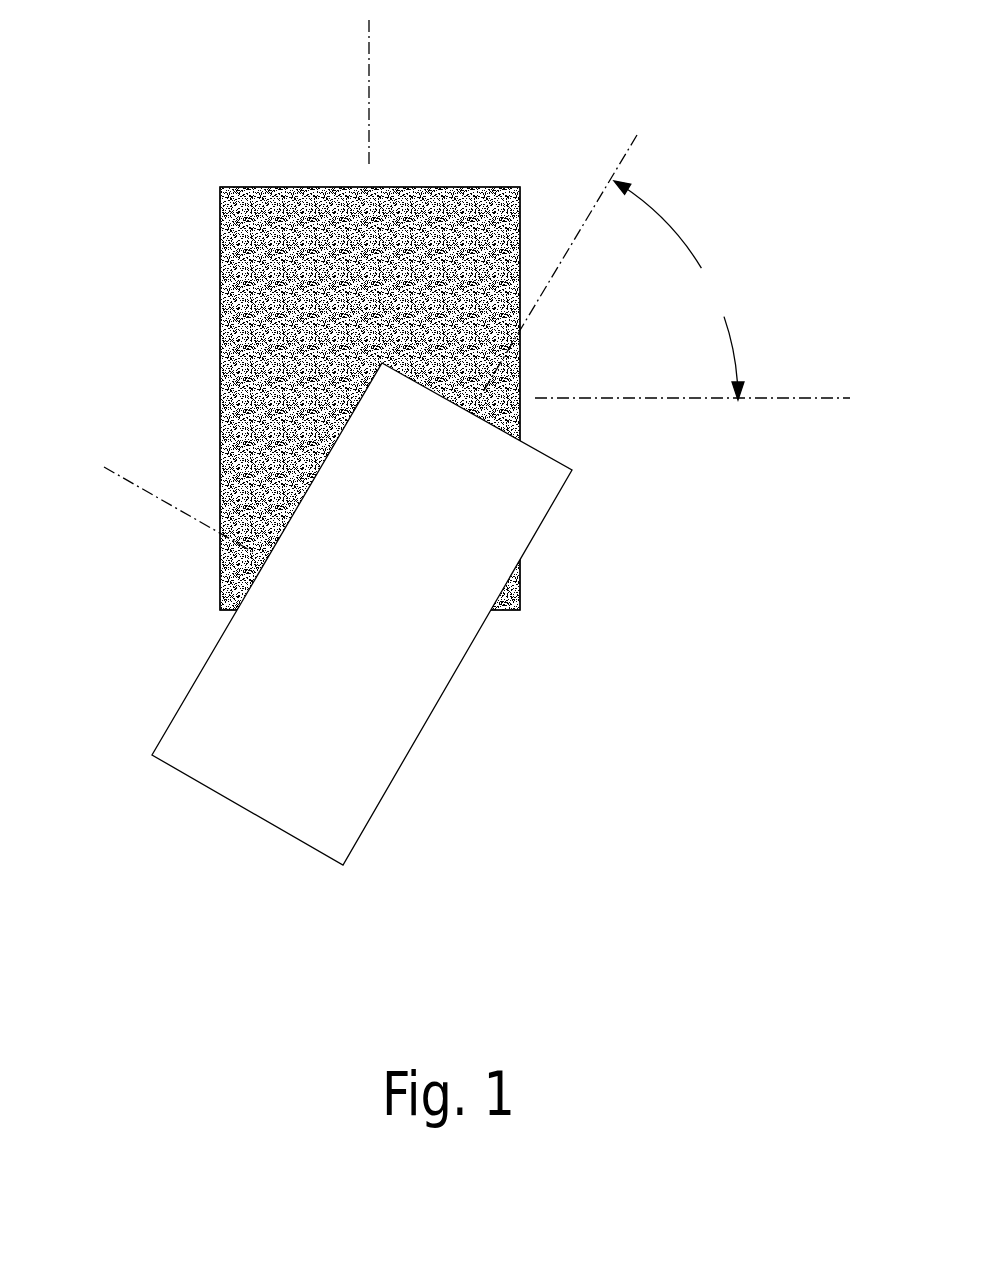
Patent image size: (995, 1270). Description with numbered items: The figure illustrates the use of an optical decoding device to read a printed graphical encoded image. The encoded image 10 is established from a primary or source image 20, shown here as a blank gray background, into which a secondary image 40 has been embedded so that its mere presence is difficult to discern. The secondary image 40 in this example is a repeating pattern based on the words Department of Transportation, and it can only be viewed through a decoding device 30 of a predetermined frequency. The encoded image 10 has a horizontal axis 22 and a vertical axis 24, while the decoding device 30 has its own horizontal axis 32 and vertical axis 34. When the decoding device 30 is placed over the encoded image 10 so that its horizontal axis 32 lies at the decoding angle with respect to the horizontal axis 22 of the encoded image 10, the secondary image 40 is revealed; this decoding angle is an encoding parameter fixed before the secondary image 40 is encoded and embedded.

The encoded image 10 is at (218, 257).
The primary image 20 is at (253, 440).
The horizontal axis of the encoded image 22 is at (805, 400).
The vertical axis of the encoded image 24 is at (369, 77).
The decoding device 30 is at (401, 614).
The horizontal axis of the decoding device 32 is at (637, 135).
The vertical axis of the decoding device 34 is at (150, 493).
The secondary image 40 is at (493, 537).